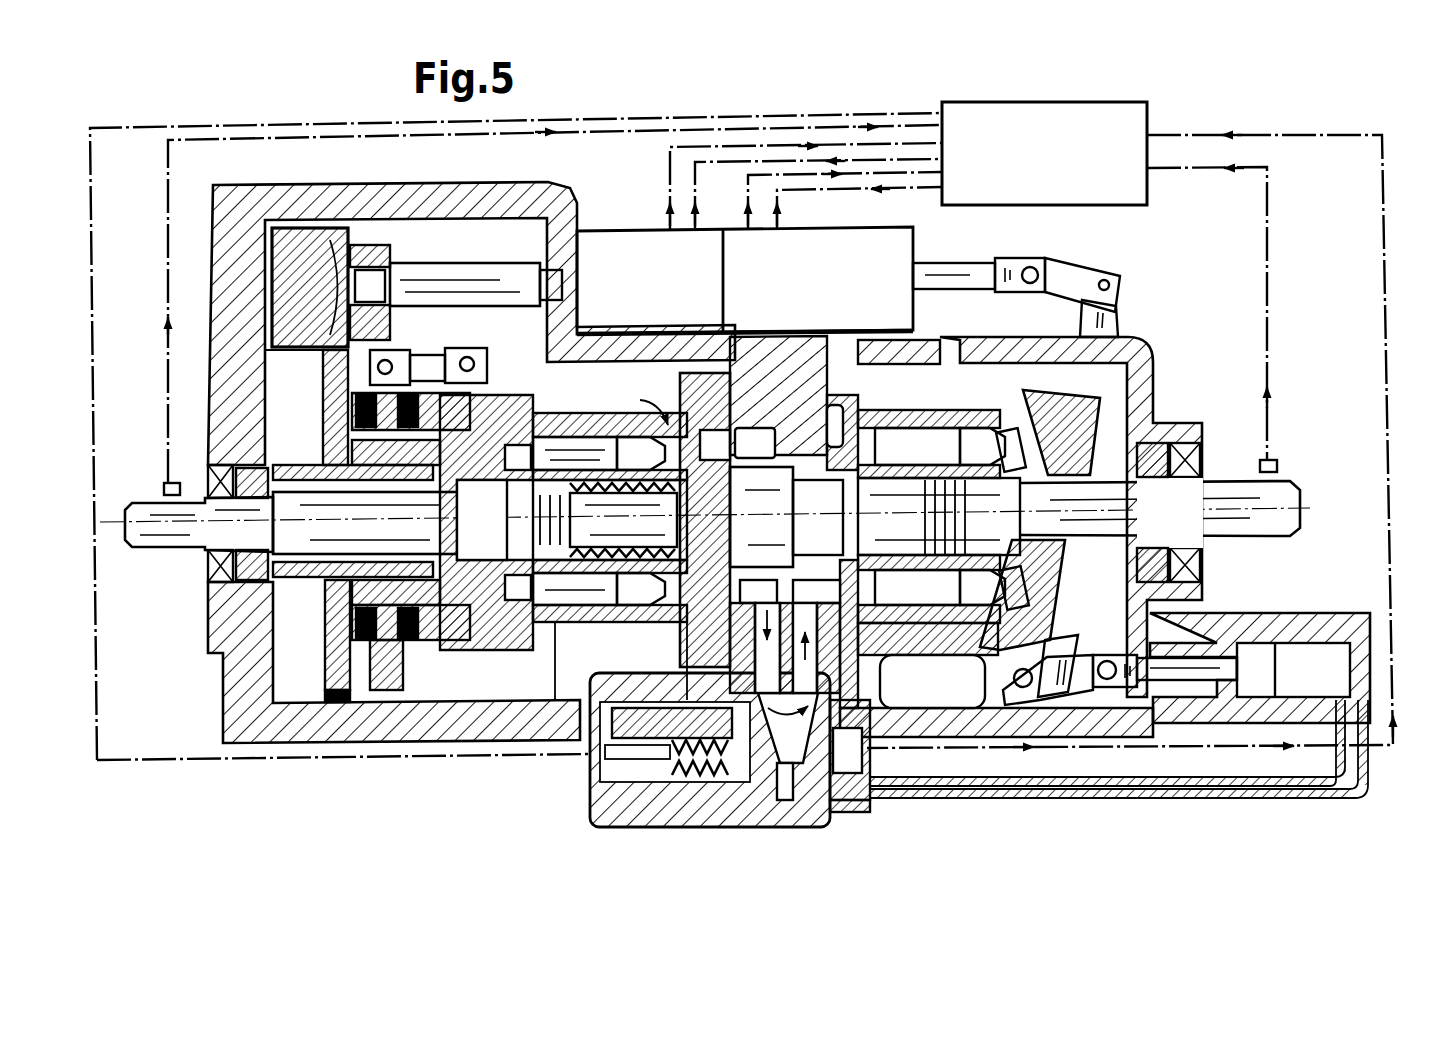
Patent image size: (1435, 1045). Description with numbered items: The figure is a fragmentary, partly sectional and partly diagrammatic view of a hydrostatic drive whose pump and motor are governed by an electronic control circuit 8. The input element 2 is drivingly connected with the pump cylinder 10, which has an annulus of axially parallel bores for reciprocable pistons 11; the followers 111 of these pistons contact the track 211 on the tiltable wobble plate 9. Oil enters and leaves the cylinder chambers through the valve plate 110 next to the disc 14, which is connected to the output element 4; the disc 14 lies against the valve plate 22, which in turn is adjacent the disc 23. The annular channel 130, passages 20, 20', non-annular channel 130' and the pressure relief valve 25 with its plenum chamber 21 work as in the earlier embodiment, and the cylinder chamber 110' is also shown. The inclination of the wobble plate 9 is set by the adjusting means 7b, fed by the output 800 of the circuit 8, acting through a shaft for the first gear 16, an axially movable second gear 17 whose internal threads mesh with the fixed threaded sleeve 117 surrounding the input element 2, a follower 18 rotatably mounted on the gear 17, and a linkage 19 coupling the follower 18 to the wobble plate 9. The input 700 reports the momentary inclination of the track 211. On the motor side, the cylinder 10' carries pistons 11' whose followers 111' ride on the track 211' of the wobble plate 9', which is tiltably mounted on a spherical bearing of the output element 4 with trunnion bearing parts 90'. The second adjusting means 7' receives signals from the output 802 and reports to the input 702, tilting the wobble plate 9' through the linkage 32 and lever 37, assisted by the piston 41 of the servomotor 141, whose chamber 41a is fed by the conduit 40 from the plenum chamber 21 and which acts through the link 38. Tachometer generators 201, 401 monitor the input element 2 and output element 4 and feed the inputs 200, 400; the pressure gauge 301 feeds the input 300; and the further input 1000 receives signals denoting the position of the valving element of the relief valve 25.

The further input 1000 is at (98, 660).
The input 200 is at (168, 187).
The tachometer generator 201 is at (165, 484).
The input 700 is at (670, 163).
The output 800 is at (695, 188).
The input 702 is at (874, 177).
The output 802 is at (927, 190).
The electronic control circuit 8 is at (1000, 196).
The input 300 is at (1252, 134).
The input 400 is at (1174, 169).
The tachometer generator 401 is at (1278, 465).
The second gear 17 is at (323, 684).
The displacing or shifting member 117 is at (214, 597).
The input element 2 is at (168, 533).
The first gear 16 is at (298, 250).
The linkage 19 is at (421, 355).
The follower 18 is at (384, 688).
The wobble plate 9 is at (403, 614).
The cylinder 10 is at (610, 654).
The pistons 11 is at (610, 701).
The followers 111 is at (590, 644).
The track 211 is at (553, 685).
The valve plate 110 is at (621, 661).
The adjusting means 7b is at (596, 248).
The second adjusting means 7' is at (819, 261).
The disc 14 is at (700, 400).
The annular channel 130 is at (798, 330).
The valve plate 22 is at (755, 440).
The disc 23 is at (858, 352).
The output element 4 is at (1292, 498).
The trunnion bearing parts 90' is at (1023, 530).
The cylinder 10' is at (932, 635).
The pistons 11' is at (964, 708).
The wobble plate 9' is at (1112, 511).
The followers 111' is at (1097, 401).
The track 211' is at (1109, 487).
The servomotor 141 is at (1330, 655).
The piston 41 is at (1300, 653).
The chamber 41a is at (1312, 656).
The link 38 is at (1075, 658).
The linkage 32 is at (1068, 276).
The lever 37 is at (1110, 320).
The pressure relief valve 25 is at (762, 728).
The passage 20 is at (788, 796).
The plenum chamber 21 is at (807, 800).
The non-annular channel 130' is at (847, 658).
The cylinder chamber 110' is at (905, 683).
The passage 20' is at (855, 798).
The pressure gauge 301 is at (848, 802).
The conduit 40 is at (1126, 792).